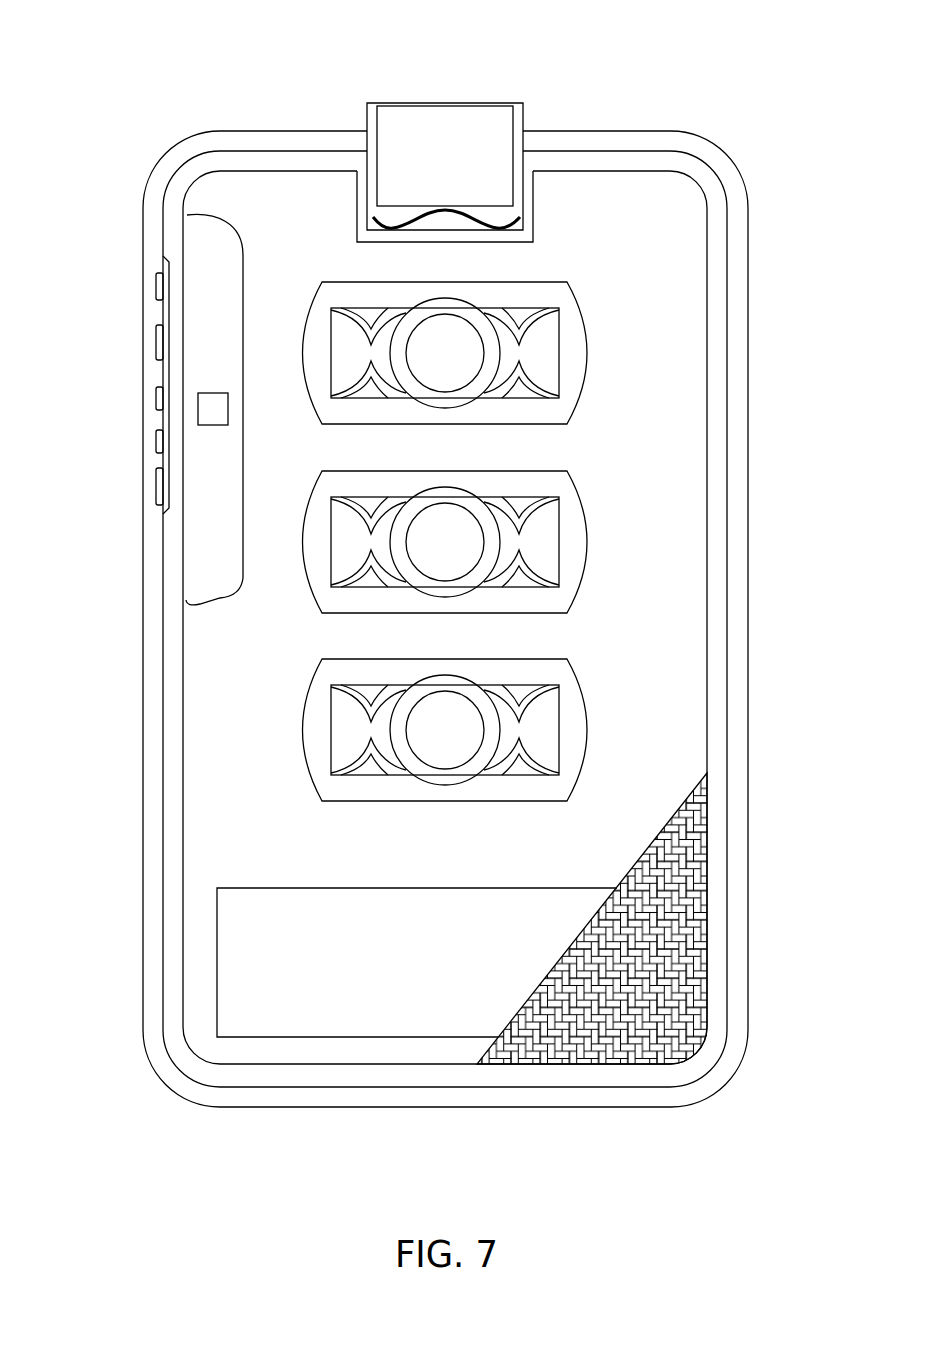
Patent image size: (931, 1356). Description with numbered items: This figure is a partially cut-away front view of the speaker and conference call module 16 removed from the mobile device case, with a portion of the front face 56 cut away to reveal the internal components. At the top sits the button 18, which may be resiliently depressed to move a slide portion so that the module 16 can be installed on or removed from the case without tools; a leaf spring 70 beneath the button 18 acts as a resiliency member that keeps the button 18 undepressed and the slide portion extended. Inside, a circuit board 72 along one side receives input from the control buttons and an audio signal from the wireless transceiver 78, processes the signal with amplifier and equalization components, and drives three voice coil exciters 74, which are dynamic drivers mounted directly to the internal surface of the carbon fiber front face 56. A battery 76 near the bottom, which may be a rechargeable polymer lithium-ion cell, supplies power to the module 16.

The speaker and conference call module 16 is at (218, 46).
The button 18 is at (444, 98).
The leaf spring 70 is at (520, 212).
The circuit board 72 is at (212, 241).
The voice coil exciters 74 is at (545, 282).
The battery 76 is at (235, 963).
The wireless transceiver 78 is at (212, 411).
The front face 56 is at (690, 957).